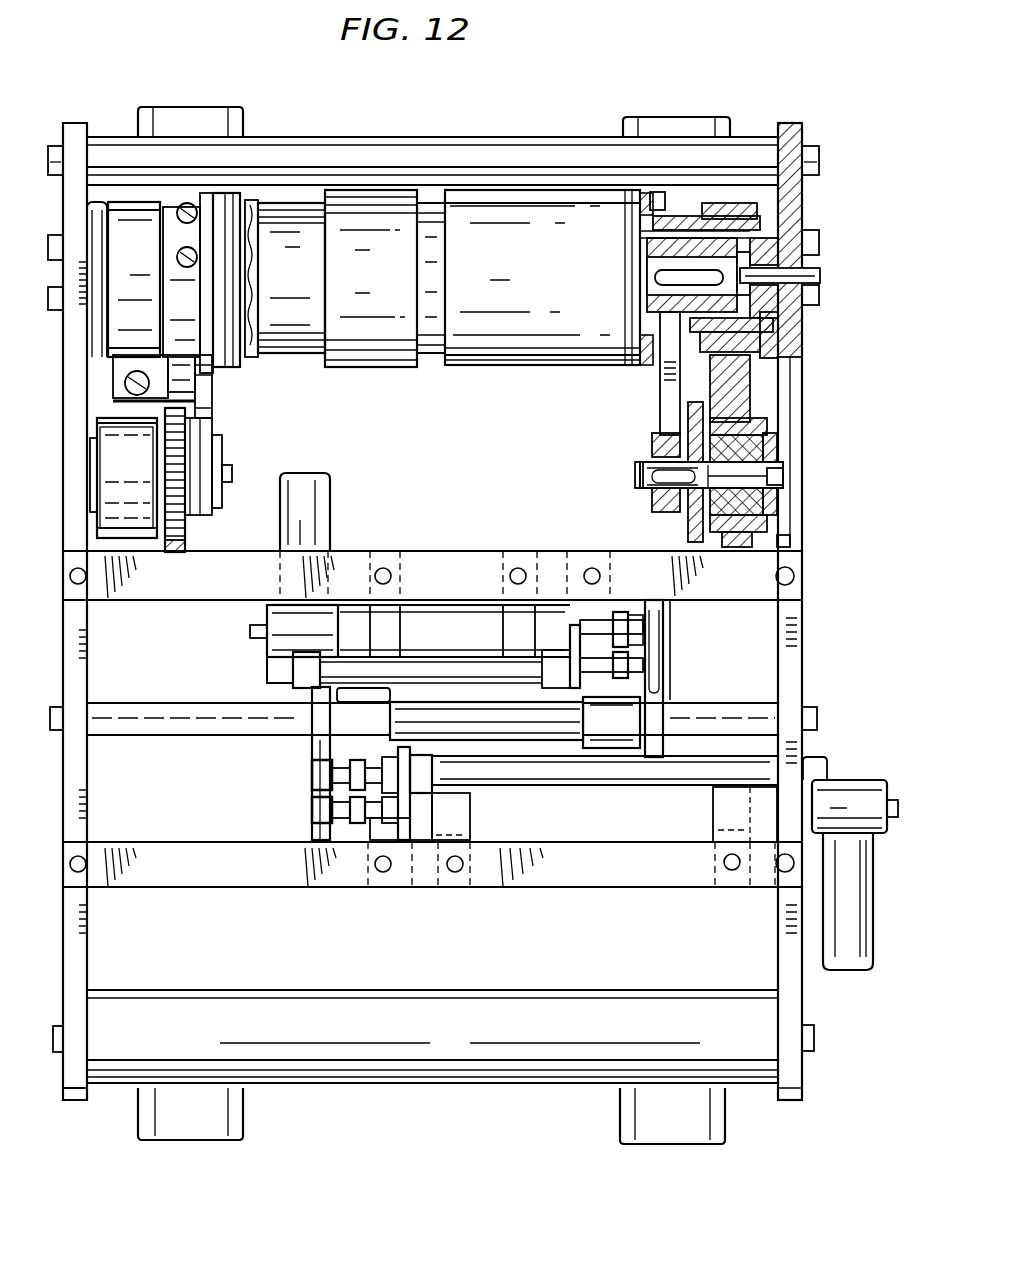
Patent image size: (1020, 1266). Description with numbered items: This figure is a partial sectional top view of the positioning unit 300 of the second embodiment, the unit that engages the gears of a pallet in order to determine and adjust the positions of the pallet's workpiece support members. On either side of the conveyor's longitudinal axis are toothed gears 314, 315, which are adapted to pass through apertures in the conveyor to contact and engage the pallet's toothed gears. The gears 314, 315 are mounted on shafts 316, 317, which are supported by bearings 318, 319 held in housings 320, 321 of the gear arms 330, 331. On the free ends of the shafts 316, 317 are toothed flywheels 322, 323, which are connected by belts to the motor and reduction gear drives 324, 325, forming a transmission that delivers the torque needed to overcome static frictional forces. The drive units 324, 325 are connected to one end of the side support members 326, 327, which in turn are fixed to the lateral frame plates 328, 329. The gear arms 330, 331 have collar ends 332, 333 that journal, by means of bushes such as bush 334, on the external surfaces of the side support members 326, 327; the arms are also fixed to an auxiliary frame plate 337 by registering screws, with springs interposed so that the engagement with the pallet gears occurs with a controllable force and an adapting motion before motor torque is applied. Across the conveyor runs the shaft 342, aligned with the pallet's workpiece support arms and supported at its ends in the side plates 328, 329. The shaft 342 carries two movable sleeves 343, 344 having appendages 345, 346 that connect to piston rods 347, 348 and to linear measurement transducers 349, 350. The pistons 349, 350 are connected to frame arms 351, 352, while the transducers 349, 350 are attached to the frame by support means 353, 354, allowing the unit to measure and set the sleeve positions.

The positioning unit 300 is at (855, 540).
The toothed gear 314 is at (185, 545).
The toothed gear 315 is at (688, 545).
The shaft 316 is at (233, 478).
The shaft 317 is at (635, 473).
The bearing 318 is at (97, 452).
The bearing 319 is at (775, 500).
The housing 320 is at (127, 518).
The housing 321 is at (735, 547).
The toothed flywheel 322 is at (220, 500).
The toothed flywheel 323 is at (655, 503).
The motor and reduction gear drive 324 is at (343, 195).
The motor and reduction gear drive 325 is at (570, 271).
The side support member 326 is at (243, 197).
The side support member 327 is at (90, 225).
The lateral frame plate 328 is at (800, 643).
The lateral frame plate 329 is at (78, 628).
The gear arm 330 is at (187, 418).
The gear arm 331 is at (735, 397).
The collar end 332 is at (738, 203).
The collar end 333 is at (160, 263).
The bush 334 is at (710, 375).
The auxiliary frame plate 337 is at (158, 368).
The shaft 342 is at (493, 725).
The movable sleeve 343 is at (383, 688).
The movable sleeve 344 is at (603, 735).
The appendage 345 is at (652, 750).
The appendage 346 is at (320, 727).
The piston rod 347 is at (313, 774).
The piston rod 348 is at (667, 660).
The linear measurement transducer 349 is at (313, 811).
The linear measurement transducer 350 is at (633, 605).
The frame arm 351 is at (388, 887).
The frame arm 352 is at (578, 553).
The support means 353 is at (457, 887).
The support means 354 is at (400, 549).